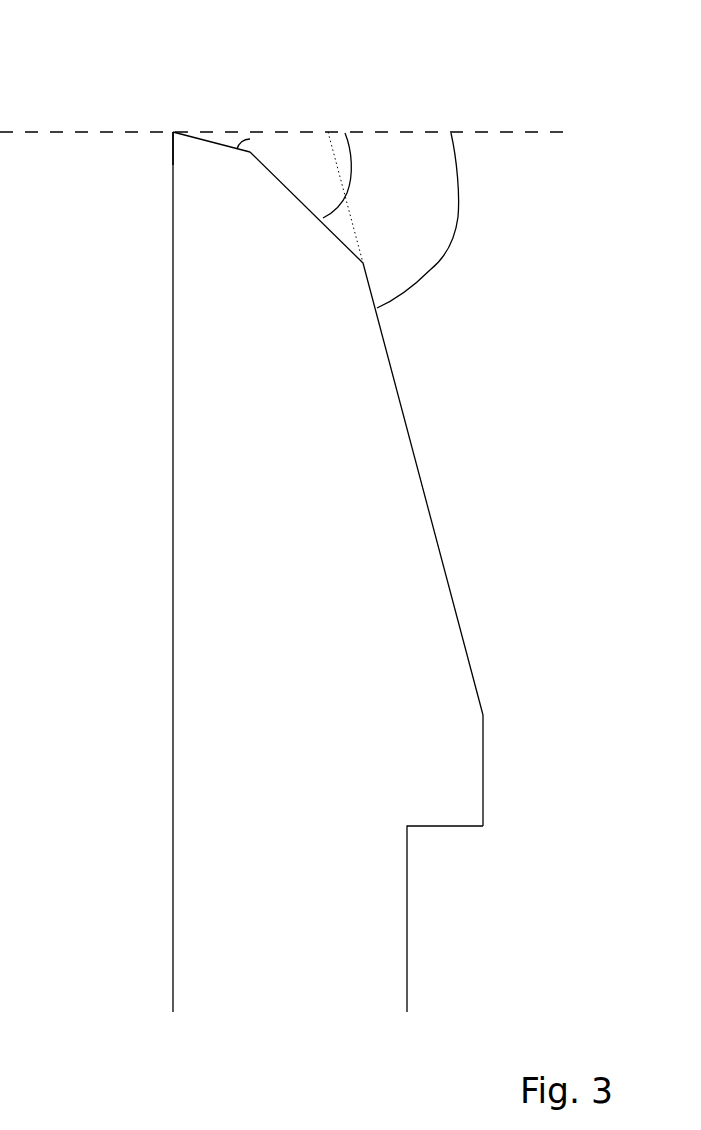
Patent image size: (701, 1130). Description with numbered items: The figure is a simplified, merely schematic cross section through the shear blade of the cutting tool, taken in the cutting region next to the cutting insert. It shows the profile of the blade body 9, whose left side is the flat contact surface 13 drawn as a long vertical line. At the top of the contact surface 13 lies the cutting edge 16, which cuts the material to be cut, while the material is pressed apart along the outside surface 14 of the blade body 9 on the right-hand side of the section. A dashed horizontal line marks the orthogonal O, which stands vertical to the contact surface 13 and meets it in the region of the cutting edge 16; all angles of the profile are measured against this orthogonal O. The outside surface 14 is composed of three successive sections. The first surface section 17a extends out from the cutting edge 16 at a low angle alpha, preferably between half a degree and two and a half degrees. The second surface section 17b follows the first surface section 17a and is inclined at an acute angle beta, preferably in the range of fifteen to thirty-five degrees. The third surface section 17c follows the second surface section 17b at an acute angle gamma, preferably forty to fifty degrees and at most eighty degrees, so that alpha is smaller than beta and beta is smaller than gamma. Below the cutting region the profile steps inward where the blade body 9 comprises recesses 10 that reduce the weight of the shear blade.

The blade body 9 is at (223, 568).
The recesses 10 is at (435, 862).
The contact surface 13 is at (173, 403).
The outside surface 14 is at (502, 322).
The cutting edge 16 is at (173, 132).
The first surface section 17a is at (202, 140).
The second surface section 17b is at (293, 197).
The third surface section 17c is at (417, 473).
The orthogonal O is at (303, 131).